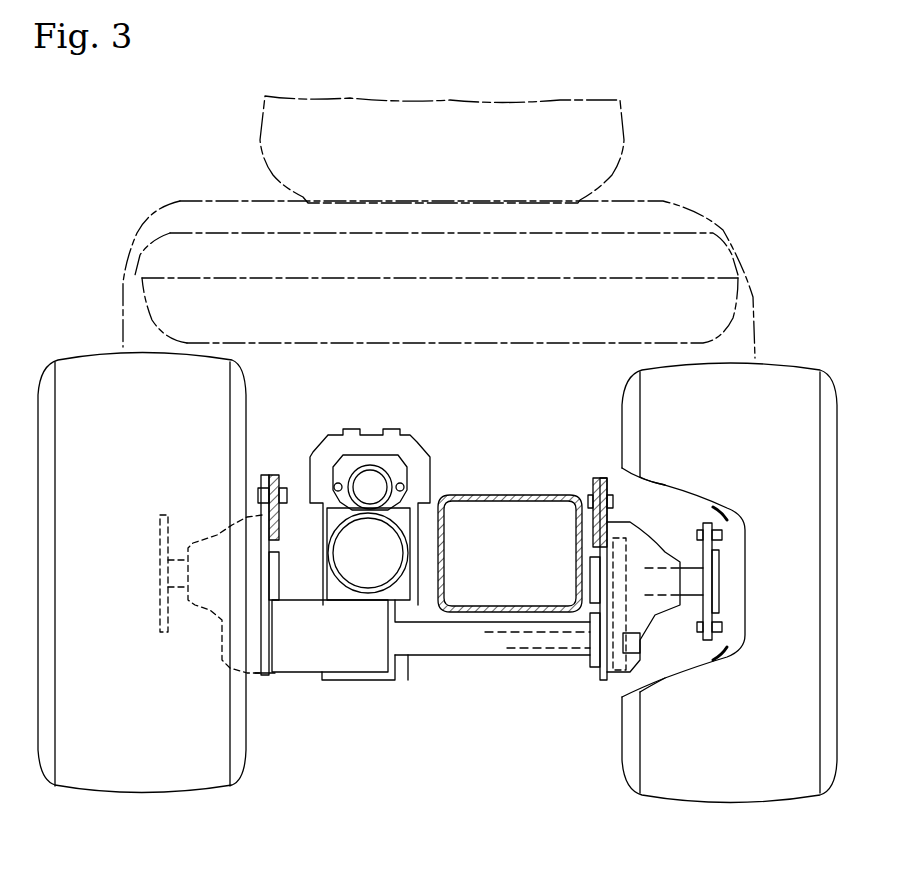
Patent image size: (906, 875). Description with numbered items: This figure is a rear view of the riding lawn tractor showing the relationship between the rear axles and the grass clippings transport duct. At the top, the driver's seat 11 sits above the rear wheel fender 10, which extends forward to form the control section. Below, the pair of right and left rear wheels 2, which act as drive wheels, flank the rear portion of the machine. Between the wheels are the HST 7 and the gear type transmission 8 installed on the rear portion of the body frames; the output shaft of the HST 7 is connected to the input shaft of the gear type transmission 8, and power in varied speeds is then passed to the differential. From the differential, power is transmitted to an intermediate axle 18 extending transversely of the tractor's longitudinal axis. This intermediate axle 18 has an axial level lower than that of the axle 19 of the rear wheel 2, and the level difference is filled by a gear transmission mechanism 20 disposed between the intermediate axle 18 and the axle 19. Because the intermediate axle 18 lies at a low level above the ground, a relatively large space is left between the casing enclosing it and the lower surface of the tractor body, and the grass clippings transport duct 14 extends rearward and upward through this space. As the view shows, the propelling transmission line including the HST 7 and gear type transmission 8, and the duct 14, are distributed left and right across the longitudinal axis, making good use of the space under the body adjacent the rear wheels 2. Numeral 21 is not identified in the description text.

The rear wheel 2 is at (243, 743).
The HST 7 is at (318, 452).
The gear type transmission 8 is at (407, 510).
The rear wheel fender 10 is at (663, 207).
The driver's seat 11 is at (262, 137).
The grass clippings transport duct 14 is at (503, 495).
The intermediate axle 18 is at (532, 650).
The axle 19 is at (645, 568).
The gear transmission mechanism 20 is at (633, 611).
The shaft housing 21 is at (573, 657).